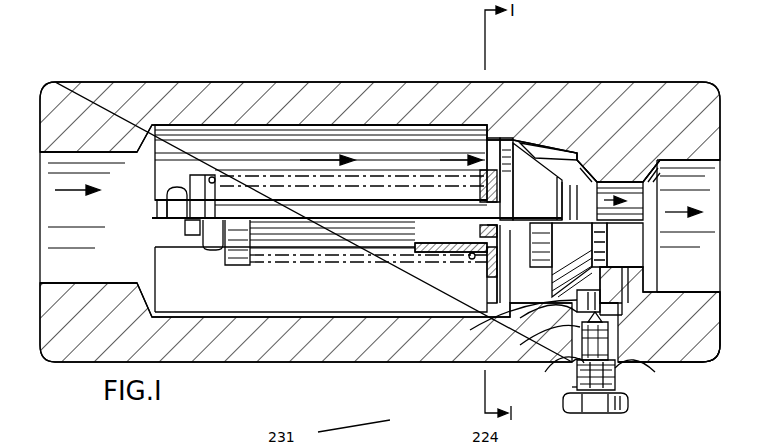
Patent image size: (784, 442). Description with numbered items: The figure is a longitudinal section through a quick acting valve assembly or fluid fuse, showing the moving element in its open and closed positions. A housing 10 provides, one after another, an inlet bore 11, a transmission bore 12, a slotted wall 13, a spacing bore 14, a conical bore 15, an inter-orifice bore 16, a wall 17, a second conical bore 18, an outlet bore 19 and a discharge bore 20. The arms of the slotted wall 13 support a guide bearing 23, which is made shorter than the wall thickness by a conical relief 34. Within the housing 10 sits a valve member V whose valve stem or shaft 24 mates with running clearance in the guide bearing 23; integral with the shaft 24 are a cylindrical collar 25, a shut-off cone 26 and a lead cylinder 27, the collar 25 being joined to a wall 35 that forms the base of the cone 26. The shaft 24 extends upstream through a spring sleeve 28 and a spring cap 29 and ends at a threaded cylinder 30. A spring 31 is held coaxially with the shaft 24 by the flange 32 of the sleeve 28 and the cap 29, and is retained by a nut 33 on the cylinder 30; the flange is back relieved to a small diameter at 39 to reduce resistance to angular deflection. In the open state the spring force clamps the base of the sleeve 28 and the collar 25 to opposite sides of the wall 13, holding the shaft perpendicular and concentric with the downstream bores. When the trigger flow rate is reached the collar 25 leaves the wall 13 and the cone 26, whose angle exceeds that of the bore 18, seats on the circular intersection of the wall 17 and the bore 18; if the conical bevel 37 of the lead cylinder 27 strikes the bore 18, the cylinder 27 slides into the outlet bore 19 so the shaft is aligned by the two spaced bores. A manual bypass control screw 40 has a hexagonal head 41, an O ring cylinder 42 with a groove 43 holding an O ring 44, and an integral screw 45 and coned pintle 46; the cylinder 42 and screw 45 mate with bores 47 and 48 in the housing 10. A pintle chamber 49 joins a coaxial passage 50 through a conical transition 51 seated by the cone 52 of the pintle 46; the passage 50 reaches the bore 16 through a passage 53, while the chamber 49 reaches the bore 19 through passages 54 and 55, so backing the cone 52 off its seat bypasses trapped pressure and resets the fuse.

The housing 10 is at (703, 362).
The inlet bore 11 is at (65, 158).
The transmission bore 12 is at (304, 135).
The slotted wall 13 is at (484, 150).
The spacing bore 14 is at (505, 150).
The conical bore 15 is at (540, 165).
The inter-orifice bore 16 is at (565, 192).
The wall 17 is at (592, 184).
The conical bore 18 is at (645, 185).
The outlet bore 19 is at (655, 190).
The discharge bore 20 is at (695, 292).
The guide bearing 23 is at (420, 247).
The valve stem or shaft 24 is at (243, 187).
The cylindrical collar 25 is at (489, 150).
The shut-off cone 26 is at (556, 175).
The lead cylinder 27 is at (604, 186).
The spring sleeve 28 is at (425, 188).
The spring cap 29 is at (205, 178).
The threaded cylinder 30 is at (165, 200).
The spring 31 is at (217, 185).
The flange 32 is at (453, 243).
The nut 33 is at (178, 190).
The conical relief 34 is at (492, 258).
The wall 35 is at (528, 148).
The conical bevel 37 is at (660, 205).
The back relief 39 is at (472, 258).
The manual bypass control screw 40 is at (587, 365).
The hexagonal head 41 is at (565, 403).
The O ring cylinder 42 is at (616, 400).
The groove 43 is at (616, 382).
The O ring 44 is at (575, 385).
The integral screw 45 is at (573, 367).
The coned pintle 46 is at (580, 345).
The bore 47 is at (629, 368).
The bore 48 is at (652, 357).
The pintle chamber 49 is at (612, 337).
The coaxial passage 50 is at (585, 330).
The conical transition 51 is at (612, 328).
The cone 52 is at (602, 307).
The passage 53 is at (588, 308).
The passage 54 is at (669, 316).
The passage 55 is at (655, 285).
The valve member V is at (380, 190).